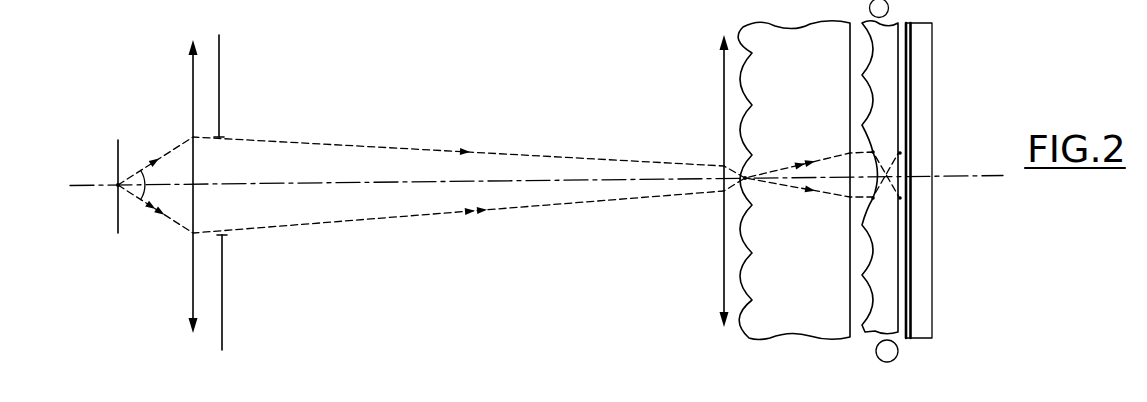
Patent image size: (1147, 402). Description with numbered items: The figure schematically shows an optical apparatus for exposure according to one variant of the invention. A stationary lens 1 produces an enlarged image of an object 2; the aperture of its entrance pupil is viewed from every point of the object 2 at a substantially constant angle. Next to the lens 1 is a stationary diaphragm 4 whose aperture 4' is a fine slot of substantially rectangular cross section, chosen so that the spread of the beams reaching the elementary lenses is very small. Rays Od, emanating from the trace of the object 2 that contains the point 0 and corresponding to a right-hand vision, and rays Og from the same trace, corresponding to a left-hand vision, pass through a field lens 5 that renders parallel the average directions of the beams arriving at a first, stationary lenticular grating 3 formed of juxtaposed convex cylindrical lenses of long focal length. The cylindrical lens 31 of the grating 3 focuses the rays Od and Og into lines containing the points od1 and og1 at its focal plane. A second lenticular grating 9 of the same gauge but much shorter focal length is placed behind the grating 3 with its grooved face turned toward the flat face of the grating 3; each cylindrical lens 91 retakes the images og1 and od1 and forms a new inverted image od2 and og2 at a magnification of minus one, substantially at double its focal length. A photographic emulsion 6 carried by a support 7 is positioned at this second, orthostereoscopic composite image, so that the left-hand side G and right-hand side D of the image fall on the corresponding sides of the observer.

The object point 0 is at (118, 184).
The object 2 is at (118, 223).
The stationary lens 1 is at (193, 298).
The diaphragm aperture 4' is at (246, 94).
The stationary diaphragm 4 is at (248, 292).
The right-hand vision rays Od is at (405, 148).
The left-hand vision rays Og is at (410, 217).
The field lens 5 is at (724, 88).
The first lenticular grating 3 is at (770, 315).
The cylindrical lens of first grating 31 is at (748, 198).
The second lenticular grating 9 is at (880, 318).
The cylindrical lens of second grating 91 is at (861, 150).
The left-hand side of image G is at (879, 9).
The right-hand side of image D is at (887, 351).
The photographic emulsion 6 is at (912, 332).
The support 7 is at (932, 302).
The first left-hand image point og1 is at (873, 152).
The second right-hand image point od2 is at (900, 153).
The second left-hand image point og2 is at (873, 198).
The first right-hand image point od1 is at (900, 198).